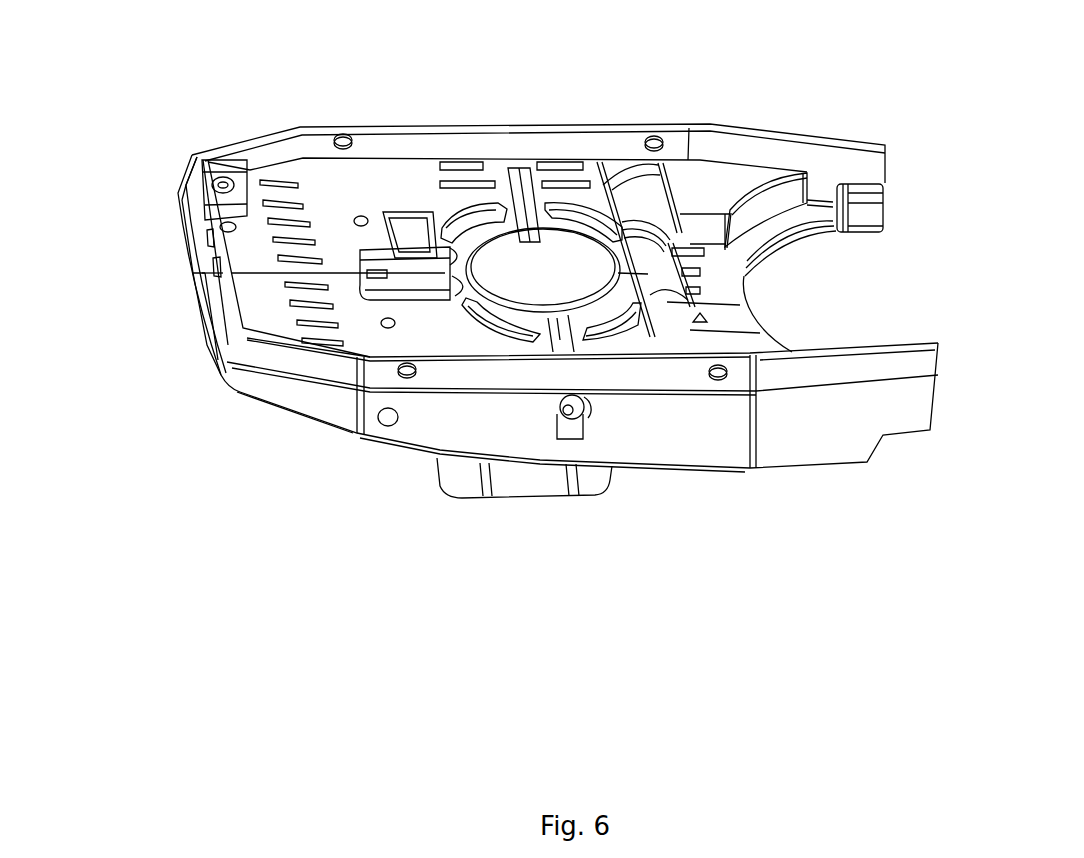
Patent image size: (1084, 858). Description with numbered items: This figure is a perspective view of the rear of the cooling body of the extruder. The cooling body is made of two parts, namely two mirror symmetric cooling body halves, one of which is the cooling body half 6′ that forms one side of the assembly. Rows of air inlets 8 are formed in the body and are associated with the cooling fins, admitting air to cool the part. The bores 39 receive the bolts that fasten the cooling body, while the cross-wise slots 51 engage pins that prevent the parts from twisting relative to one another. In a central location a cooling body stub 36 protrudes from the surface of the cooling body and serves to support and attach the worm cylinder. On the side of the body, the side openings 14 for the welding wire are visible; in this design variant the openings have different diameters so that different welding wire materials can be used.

The air inlets 8 is at (278, 182).
The bores for the bolts 39 is at (405, 232).
The cross-wise slots 51 is at (520, 233).
The cooling body half 6′ is at (218, 360).
The cooling body stub 36 is at (525, 490).
The side openings 14 is at (571, 420).